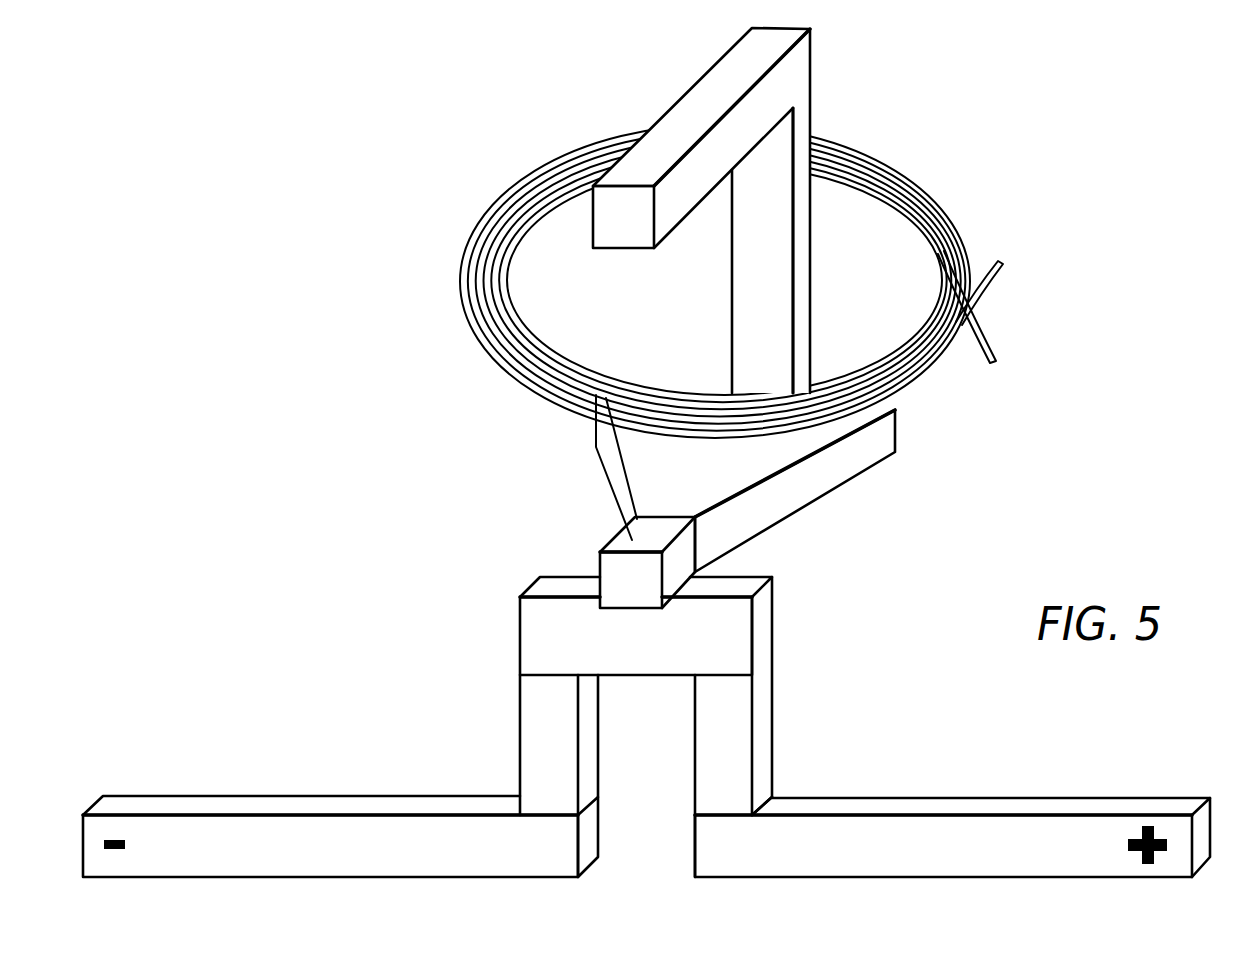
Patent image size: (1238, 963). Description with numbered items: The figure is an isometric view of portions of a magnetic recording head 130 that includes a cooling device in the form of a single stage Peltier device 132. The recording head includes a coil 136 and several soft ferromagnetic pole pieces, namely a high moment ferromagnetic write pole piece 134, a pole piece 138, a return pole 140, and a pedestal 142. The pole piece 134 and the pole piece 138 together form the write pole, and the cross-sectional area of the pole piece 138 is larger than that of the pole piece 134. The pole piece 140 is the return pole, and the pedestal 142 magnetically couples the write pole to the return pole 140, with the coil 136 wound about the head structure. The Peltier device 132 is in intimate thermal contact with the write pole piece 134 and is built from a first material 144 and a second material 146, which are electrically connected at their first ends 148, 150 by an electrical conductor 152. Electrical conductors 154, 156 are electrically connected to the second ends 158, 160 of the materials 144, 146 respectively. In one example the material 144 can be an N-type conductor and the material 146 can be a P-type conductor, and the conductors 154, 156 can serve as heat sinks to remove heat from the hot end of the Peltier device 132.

The magnetic recording head 130 is at (1074, 383).
The single stage Peltier device 132 is at (392, 699).
The high moment ferromagnetic write pole piece 134 is at (632, 540).
The coil 136 is at (460, 280).
The pole piece 138 is at (780, 507).
The return pole 140 is at (690, 102).
The pedestal 142 is at (752, 314).
The first material 144 is at (518, 760).
The second material 146 is at (733, 752).
The first end 148 is at (548, 672).
The first end 150 is at (727, 677).
The electrical conductor 152 is at (765, 623).
The electrical conductor 154 is at (347, 865).
The electrical conductor 156 is at (875, 857).
The second end 158 is at (543, 817).
The second end 160 is at (722, 817).